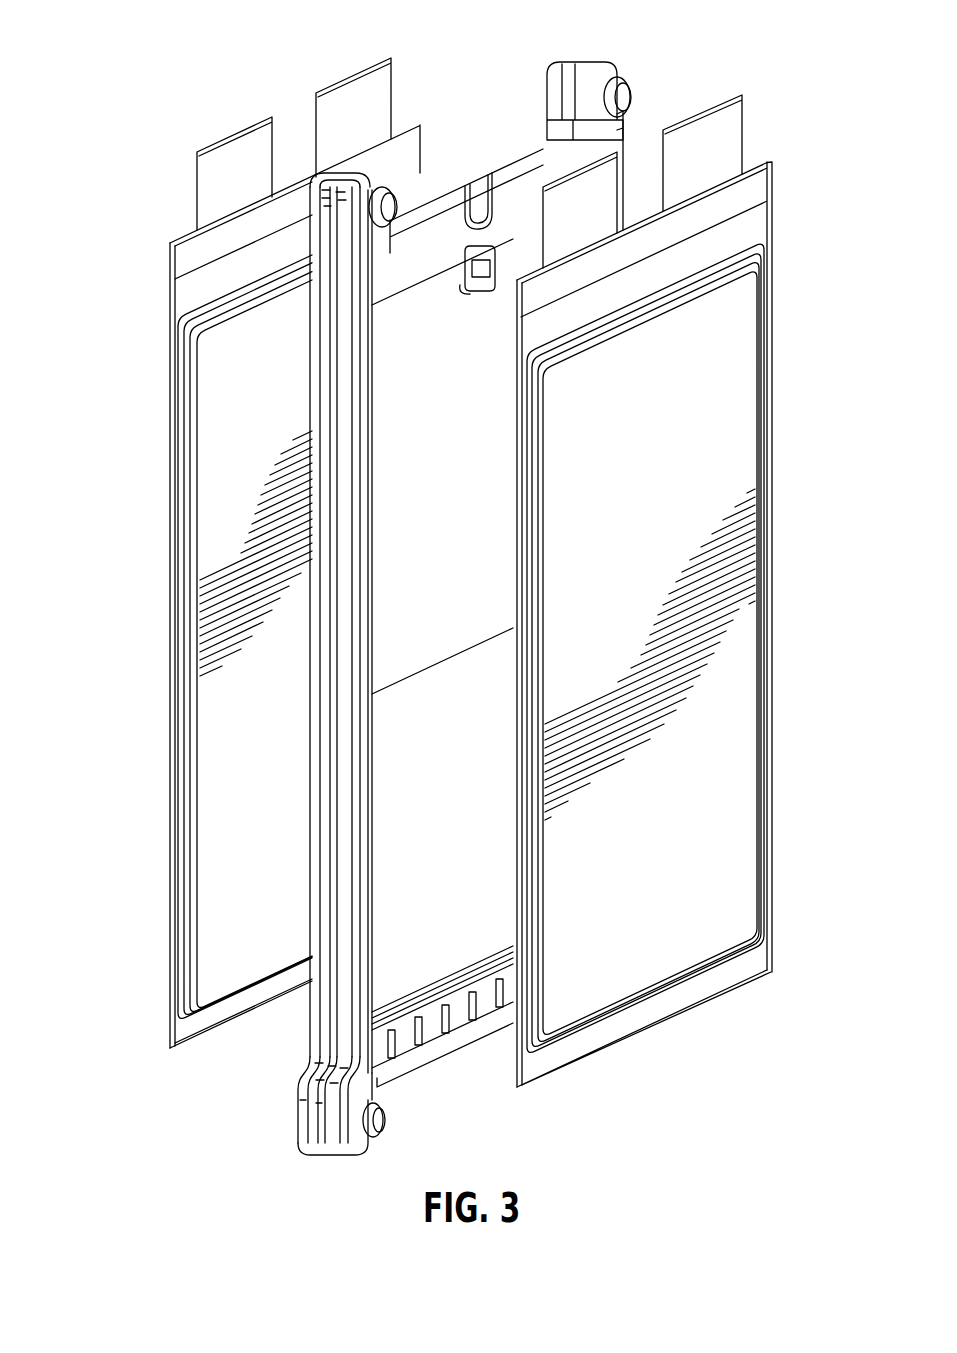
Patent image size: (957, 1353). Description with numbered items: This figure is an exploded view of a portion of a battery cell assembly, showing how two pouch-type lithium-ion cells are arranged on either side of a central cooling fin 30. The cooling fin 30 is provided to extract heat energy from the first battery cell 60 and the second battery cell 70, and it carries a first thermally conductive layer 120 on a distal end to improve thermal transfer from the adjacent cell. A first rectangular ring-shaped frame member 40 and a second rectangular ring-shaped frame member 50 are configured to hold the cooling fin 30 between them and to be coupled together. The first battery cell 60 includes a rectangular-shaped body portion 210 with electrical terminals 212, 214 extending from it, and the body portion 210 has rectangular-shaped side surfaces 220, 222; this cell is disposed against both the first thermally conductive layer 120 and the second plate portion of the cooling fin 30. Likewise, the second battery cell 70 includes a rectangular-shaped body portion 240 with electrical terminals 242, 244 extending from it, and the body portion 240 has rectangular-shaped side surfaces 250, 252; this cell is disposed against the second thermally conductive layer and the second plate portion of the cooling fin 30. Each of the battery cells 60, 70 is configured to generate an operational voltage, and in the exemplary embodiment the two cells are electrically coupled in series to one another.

The cooling fin 30 is at (428, 960).
The first rectangular ring-shaped frame member 40 is at (333, 1157).
The second rectangular ring-shaped frame member 50 is at (310, 1153).
The first battery cell 60 is at (547, 1056).
The second battery cell 70 is at (182, 1031).
The first thermally conductive layer 120 is at (443, 327).
The rectangular-shaped body portion 210 is at (743, 828).
The electrical terminal 212 is at (607, 170).
The electrical terminal 214 is at (723, 112).
The rectangular-shaped side surface 220 is at (752, 888).
The rectangular-shaped side surface 222 is at (508, 1047).
The rectangular-shaped body portion 240 is at (224, 866).
The electrical terminal 242 is at (215, 145).
The electrical terminal 244 is at (363, 70).
The rectangular-shaped side surface 250 is at (217, 947).
The rectangular-shaped side surface 252 is at (168, 803).